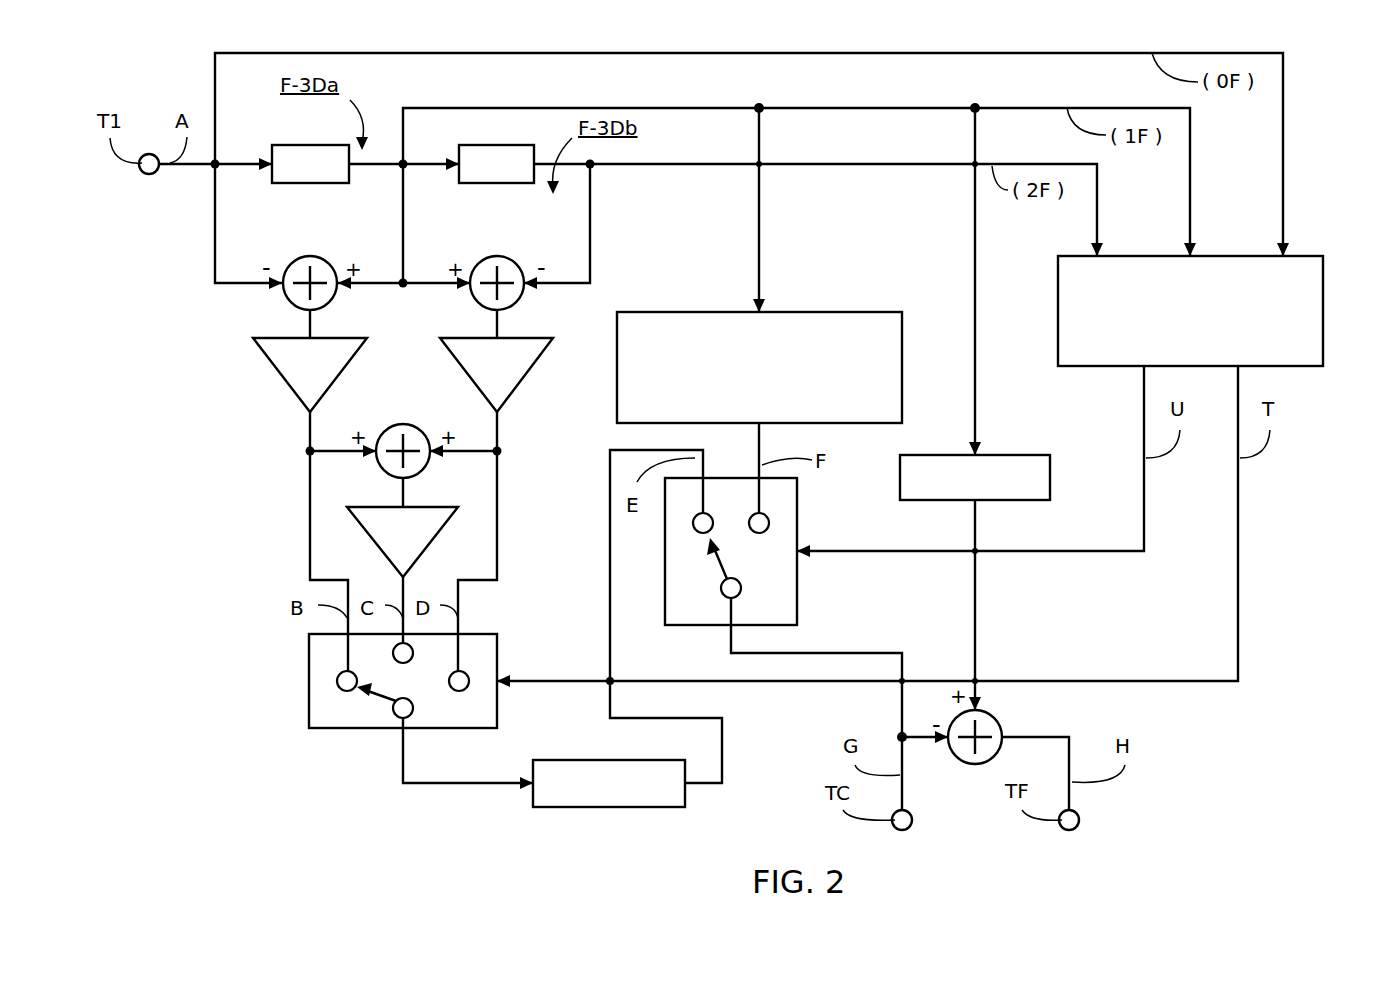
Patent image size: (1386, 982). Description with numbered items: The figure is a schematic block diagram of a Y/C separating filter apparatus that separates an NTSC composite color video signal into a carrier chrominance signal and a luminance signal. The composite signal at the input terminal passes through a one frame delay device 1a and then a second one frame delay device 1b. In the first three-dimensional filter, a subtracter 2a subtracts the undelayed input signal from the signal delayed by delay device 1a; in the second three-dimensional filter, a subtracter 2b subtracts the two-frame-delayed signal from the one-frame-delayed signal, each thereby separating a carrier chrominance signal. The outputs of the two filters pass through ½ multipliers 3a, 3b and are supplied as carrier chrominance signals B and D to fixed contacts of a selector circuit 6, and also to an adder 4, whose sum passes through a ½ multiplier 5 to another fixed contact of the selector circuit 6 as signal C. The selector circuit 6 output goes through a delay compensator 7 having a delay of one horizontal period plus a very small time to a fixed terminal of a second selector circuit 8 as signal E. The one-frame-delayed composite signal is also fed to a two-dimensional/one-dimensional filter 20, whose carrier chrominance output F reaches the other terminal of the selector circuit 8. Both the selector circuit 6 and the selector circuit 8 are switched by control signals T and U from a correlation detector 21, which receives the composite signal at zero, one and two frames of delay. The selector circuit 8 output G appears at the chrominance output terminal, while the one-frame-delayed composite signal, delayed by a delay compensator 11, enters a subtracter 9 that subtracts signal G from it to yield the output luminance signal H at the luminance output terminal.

The one frame delay device 1a is at (313, 145).
The one frame delay device 1b is at (474, 145).
The subtracter 2a is at (313, 256).
The subtracter 2b is at (500, 256).
The ½ multiplier 3a is at (270, 365).
The ½ multiplier 3b is at (535, 365).
The adder 4 is at (415, 430).
The ½ multiplier 5 is at (430, 500).
The selector circuit 6 is at (498, 652).
The delay compensator 7 is at (590, 758).
The selector circuit 8 is at (798, 524).
The subtracter 9 is at (975, 765).
The delay compensator 11 is at (1003, 455).
The two-dimensional/one-dimensional filter 20 is at (800, 310).
The correlation detector 21 is at (1323, 308).